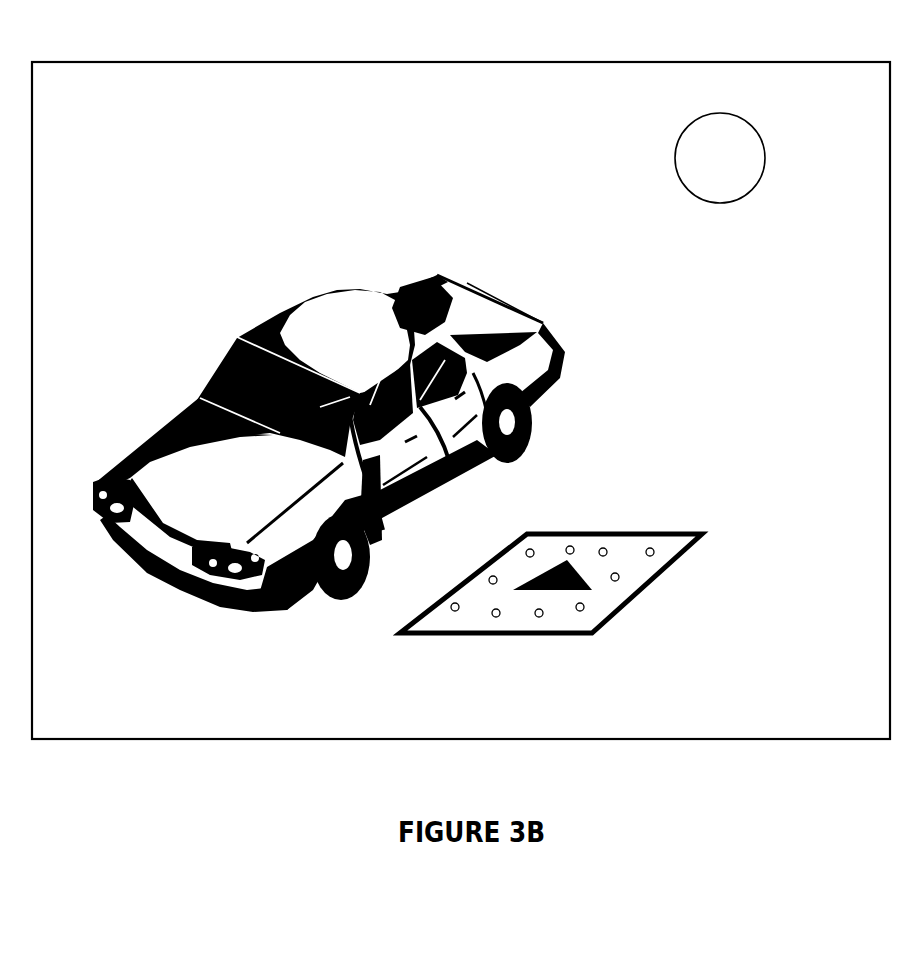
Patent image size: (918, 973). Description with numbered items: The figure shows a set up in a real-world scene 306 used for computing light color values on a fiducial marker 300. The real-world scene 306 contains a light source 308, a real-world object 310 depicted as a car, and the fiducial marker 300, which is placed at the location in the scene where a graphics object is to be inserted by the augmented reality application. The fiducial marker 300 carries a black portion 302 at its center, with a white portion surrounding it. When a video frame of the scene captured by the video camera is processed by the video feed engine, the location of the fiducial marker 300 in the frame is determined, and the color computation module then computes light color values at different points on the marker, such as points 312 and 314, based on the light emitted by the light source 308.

The fiducial marker 300 is at (603, 533).
The black portion 302 is at (547, 572).
The real-world scene 306 is at (388, 60).
The light source 308 is at (700, 170).
The real-world object 310 is at (480, 293).
The point on the fiducial marker 312 is at (617, 583).
The point on the fiducial marker 314 is at (452, 605).